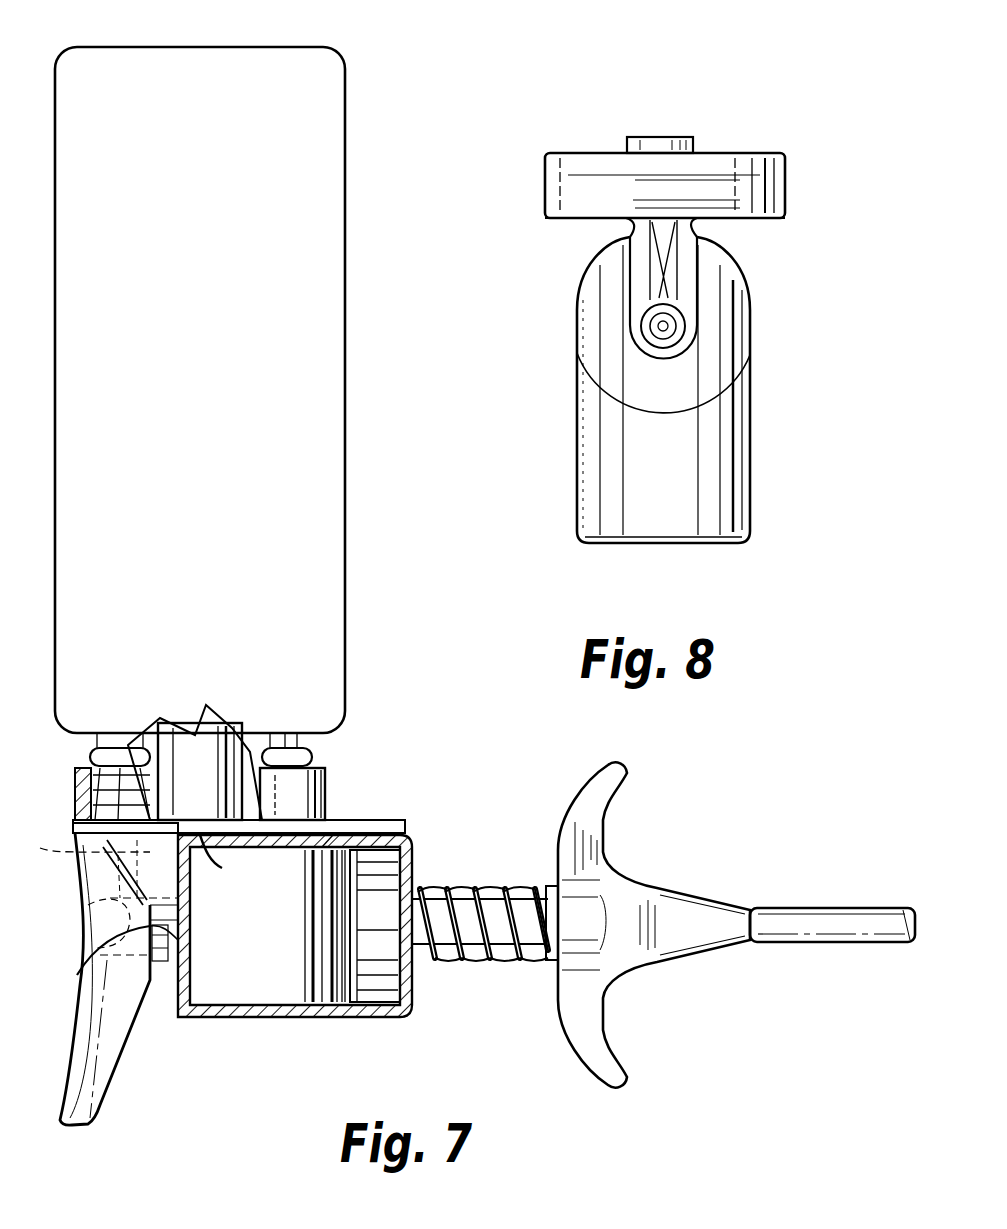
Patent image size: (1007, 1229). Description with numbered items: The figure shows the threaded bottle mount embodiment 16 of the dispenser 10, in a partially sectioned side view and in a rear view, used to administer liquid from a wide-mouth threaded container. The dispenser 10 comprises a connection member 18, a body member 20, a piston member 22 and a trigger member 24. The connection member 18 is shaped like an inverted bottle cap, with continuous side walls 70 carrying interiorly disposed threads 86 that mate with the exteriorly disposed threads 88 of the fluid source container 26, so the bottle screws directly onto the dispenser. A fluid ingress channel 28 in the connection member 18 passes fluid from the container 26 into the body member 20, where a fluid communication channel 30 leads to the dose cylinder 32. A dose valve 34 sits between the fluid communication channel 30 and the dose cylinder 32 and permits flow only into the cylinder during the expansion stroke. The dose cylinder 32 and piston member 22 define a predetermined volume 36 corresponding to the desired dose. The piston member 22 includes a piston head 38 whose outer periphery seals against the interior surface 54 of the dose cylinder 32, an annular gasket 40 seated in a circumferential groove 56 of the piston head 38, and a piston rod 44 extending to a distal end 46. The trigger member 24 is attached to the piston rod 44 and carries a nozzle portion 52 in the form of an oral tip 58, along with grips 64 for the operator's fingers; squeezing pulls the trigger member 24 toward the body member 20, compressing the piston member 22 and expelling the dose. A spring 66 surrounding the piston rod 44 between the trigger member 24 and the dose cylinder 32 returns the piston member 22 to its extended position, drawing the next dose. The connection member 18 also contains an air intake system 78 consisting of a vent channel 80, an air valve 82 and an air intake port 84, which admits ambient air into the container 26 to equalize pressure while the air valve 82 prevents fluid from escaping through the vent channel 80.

In FIG. 7, the dispenser 10 is at (443, 1029).
In FIG. 8, the dispenser 10 is at (778, 100).
In FIG. 7, the threaded bottle mount embodiment 16 is at (481, 1031).
In FIG. 8, the threaded bottle mount embodiment 16 is at (815, 110).
In FIG. 7, the connection member 18 is at (365, 798).
In FIG. 8, the connection member 18 is at (575, 135).
In FIG. 7, the body member 20 is at (162, 1070).
In FIG. 8, the body member 20 is at (750, 442).
In FIG. 7, the piston member 22 is at (457, 863).
In FIG. 7, the trigger member 24 is at (732, 867).
In FIG. 7, the fluid source container 26 is at (206, 201).
In FIG. 7, the fluid ingress channel 28 is at (85, 858).
In FIG. 7, the fluid communication channel 30 is at (88, 934).
In FIG. 8, the fluid communication channel 30 is at (672, 260).
In FIG. 7, the dose cylinder 32 is at (238, 1017).
In FIG. 7, the dose valve 34 is at (100, 952).
In FIG. 8, the dose valve 34 is at (663, 348).
In FIG. 7, the predetermined volume 36 is at (278, 925).
In FIG. 7, the piston head 38 is at (355, 1017).
In FIG. 7, the annular gasket 40 is at (320, 1017).
In FIG. 7, the piston rod 44 is at (490, 889).
In FIG. 7, the distal end 46 is at (553, 838).
In FIG. 7, the nozzle portion 52 is at (822, 890).
In FIG. 7, the interior surface 54 is at (262, 1005).
In FIG. 7, the circumferential groove 56 is at (325, 847).
In FIG. 7, the oral tip 58 is at (878, 908).
In FIG. 7, the grips 64 is at (600, 820).
In FIG. 7, the spring 66 is at (524, 960).
In FIG. 7, the side walls 70 is at (325, 795).
In FIG. 8, the side walls 70 is at (785, 175).
In FIG. 7, the air intake system 78 is at (210, 778).
In FIG. 8, the air intake system 78 is at (665, 137).
In FIG. 7, the vent channel 80 is at (183, 722).
In FIG. 7, the air valve 82 is at (218, 722).
In FIG. 7, the air intake port 84 is at (230, 862).
In FIG. 7, the interiorly disposed threads 86 is at (75, 788).
In FIG. 7, the exteriorly disposed threads 88 is at (300, 748).